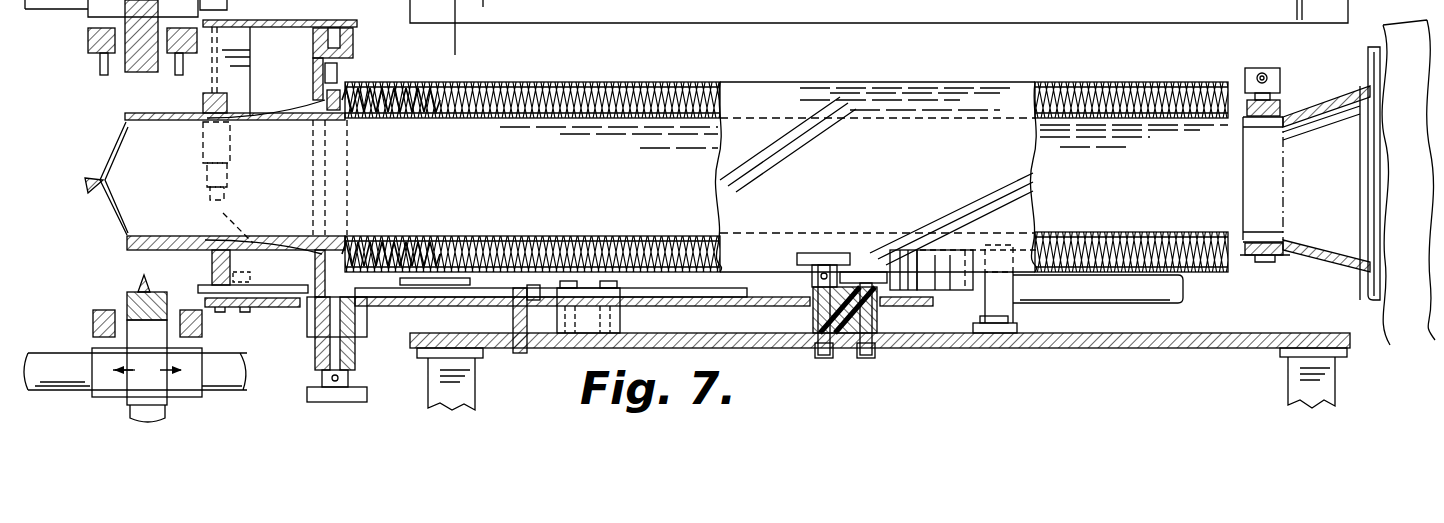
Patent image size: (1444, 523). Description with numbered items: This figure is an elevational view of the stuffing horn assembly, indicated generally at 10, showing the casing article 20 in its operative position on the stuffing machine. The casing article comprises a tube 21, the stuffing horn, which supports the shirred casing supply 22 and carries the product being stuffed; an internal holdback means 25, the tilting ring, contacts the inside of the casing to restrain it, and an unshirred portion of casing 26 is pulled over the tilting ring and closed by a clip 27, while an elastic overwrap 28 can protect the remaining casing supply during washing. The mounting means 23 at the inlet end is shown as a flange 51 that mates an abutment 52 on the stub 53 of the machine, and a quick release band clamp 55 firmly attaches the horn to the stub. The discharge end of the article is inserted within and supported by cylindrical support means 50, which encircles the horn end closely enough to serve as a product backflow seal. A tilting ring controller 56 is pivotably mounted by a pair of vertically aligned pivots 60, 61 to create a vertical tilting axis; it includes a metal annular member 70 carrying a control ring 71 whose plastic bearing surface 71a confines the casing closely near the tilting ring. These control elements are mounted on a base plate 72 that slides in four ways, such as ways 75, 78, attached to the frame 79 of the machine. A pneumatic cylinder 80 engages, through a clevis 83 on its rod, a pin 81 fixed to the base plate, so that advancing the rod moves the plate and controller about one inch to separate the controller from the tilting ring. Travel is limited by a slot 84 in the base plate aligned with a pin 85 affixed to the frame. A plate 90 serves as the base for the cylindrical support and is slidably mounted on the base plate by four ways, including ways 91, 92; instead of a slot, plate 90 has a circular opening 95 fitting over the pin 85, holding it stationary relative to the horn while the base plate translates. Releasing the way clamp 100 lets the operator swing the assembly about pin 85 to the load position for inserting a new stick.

The apparatus 10 is at (428, 43).
The casing article 20 is at (955, 76).
The tube 21 is at (590, 82).
The casing supply 22 is at (668, 82).
The mounting means 23 is at (1290, 259).
The internal holdback means 25 is at (355, 122).
The casing 26 is at (118, 135).
The clip 27 is at (103, 180).
The elastic overwrap 28 is at (718, 175).
The cylindrical support means 50 is at (140, 248).
The flange 51 is at (1245, 254).
The abutment 52 is at (1262, 107).
The stub 53 is at (1332, 96).
The quick release band clamp 55 is at (1258, 68).
The tilting ring controller 56 is at (345, 70).
The pivot 60 is at (340, 315).
The pivot 61 is at (313, 45).
The metal annular member 70 is at (313, 75).
The control ring 71 is at (327, 98).
The bearing surface 71a is at (322, 237).
The base plate 72 is at (690, 306).
The way 75 is at (620, 325).
The way 78 is at (815, 318).
The frame 79 is at (922, 348).
The pneumatic cylinder 80 is at (1090, 303).
The pin 81 is at (910, 250).
The clevis 83 is at (957, 250).
The slot 84 is at (548, 305).
The pin 85 is at (513, 305).
The plate 90 is at (262, 293).
The way 91 is at (215, 280).
The way 92 is at (455, 270).
The circular opening 95 is at (520, 290).
The clamp 100 is at (817, 253).